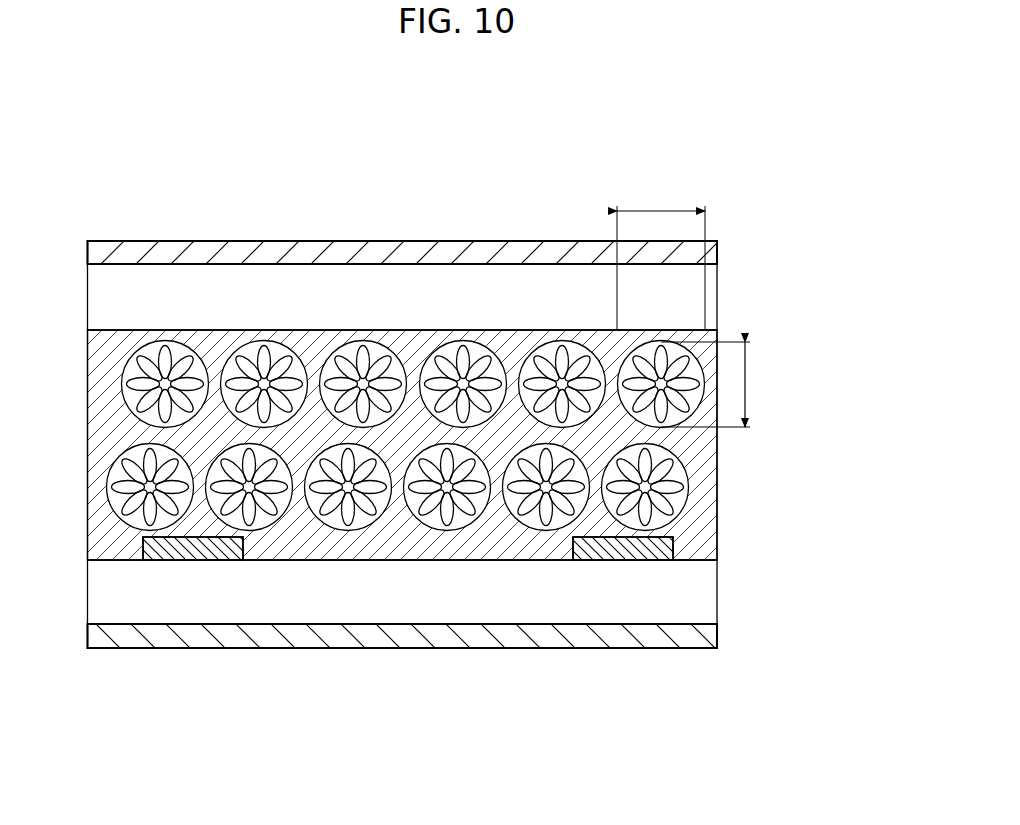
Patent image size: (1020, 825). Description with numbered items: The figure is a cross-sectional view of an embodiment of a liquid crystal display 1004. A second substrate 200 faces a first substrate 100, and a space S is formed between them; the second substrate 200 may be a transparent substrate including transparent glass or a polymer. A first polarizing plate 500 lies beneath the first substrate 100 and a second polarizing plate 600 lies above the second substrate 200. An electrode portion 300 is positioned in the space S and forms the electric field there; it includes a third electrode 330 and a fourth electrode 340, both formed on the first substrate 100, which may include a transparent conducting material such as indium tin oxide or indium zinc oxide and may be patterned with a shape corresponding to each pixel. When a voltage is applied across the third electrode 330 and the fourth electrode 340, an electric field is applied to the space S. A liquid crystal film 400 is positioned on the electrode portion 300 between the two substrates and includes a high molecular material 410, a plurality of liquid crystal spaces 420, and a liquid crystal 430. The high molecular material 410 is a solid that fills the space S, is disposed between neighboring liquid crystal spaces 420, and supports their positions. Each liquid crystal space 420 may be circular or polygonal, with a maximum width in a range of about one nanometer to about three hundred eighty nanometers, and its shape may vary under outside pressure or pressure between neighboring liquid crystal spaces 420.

The display device 1004 is at (464, 469).
The first substrate 100 is at (403, 633).
The second substrate 200 is at (403, 257).
The electrode portion 300 is at (408, 679).
The third electrode 330 is at (280, 658).
The fourth electrode 340 is at (555, 658).
The liquid crystal film 400 is at (464, 445).
The high molecular material 410 is at (437, 445).
The liquid crystal space 420 is at (446, 436).
The liquid crystal 430 is at (449, 436).
The first polarizing plate 500 is at (403, 665).
The second polarizing plate 600 is at (403, 224).
The space S is at (314, 266).